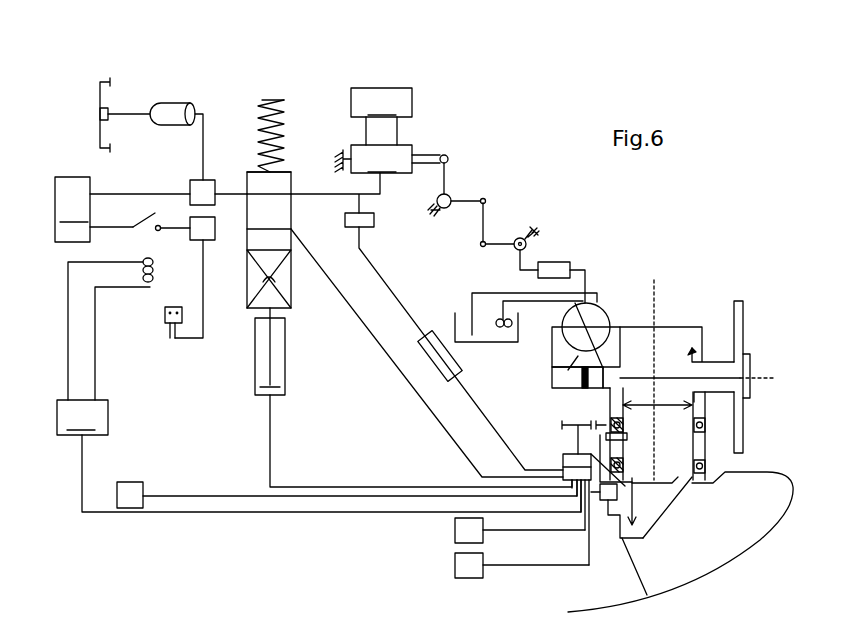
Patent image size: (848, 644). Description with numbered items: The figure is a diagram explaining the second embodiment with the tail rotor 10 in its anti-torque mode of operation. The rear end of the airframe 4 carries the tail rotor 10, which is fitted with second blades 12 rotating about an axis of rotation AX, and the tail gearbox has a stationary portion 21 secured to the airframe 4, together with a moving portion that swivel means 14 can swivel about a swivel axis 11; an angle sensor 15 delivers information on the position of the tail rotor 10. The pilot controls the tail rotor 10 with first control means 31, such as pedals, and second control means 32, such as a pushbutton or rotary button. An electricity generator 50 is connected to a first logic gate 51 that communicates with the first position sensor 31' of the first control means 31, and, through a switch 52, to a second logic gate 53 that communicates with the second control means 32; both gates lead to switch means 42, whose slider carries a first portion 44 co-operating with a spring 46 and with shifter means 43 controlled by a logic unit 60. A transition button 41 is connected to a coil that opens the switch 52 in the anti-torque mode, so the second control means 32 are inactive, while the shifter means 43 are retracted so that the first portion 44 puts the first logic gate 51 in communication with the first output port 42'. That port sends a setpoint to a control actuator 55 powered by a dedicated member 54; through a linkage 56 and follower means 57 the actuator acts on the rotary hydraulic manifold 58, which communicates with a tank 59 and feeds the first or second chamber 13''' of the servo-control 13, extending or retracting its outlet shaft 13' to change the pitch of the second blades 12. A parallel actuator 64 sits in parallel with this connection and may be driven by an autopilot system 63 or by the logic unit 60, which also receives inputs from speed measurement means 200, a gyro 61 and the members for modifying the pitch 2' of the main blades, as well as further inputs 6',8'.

The airframe 4 is at (748, 563).
The tail rotor 10 is at (752, 265).
The swivel axis 11 is at (656, 308).
The second blades 12 is at (737, 300).
The servo-control 13 is at (616, 368).
The outlet shaft 13' is at (766, 361).
The second chamber 13''' is at (574, 396).
The swivel means 14 is at (563, 458).
The angle sensor 15 is at (627, 437).
The stationary portion 21 is at (667, 515).
The members for modifying the pitch 2' is at (499, 532).
The sensor inputs 6',8' is at (488, 569).
The first control means 31 is at (87, 102).
The first position sensor 31' is at (177, 120).
The second control means 32 is at (168, 350).
The transition button 41 is at (319, 385).
The switch means 42 is at (261, 334).
The first output port 42' is at (335, 206).
The shifter means 43 is at (282, 405).
The first portion 44 is at (291, 183).
The spring 46 is at (287, 118).
The electricity generator 50 is at (151, 209).
The first logic gate 51 is at (193, 180).
The switch 52 is at (140, 215).
The second logic gate 53 is at (190, 236).
The dedicated member 54 is at (381, 116).
The control actuator 55 is at (391, 159).
The linkage 56 is at (500, 210).
The follower means 57 is at (575, 247).
The hydraulic manifold 58 is at (597, 275).
The tank 59 is at (455, 322).
The logic unit 60 is at (575, 474).
The gyro 61 is at (605, 500).
The autopilot system 63 is at (432, 372).
The parallel actuator 64 is at (374, 221).
The speed measurement means 200 is at (130, 482).
The axis of rotation AX is at (752, 383).